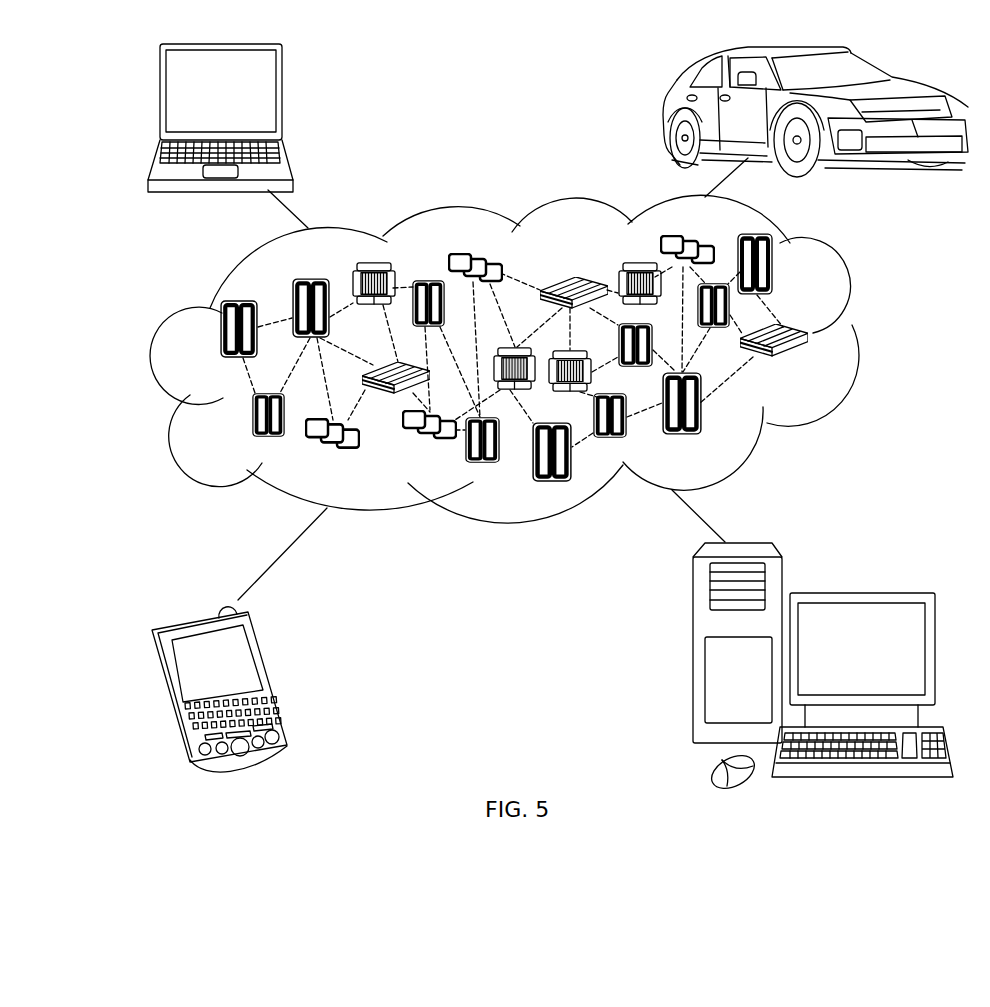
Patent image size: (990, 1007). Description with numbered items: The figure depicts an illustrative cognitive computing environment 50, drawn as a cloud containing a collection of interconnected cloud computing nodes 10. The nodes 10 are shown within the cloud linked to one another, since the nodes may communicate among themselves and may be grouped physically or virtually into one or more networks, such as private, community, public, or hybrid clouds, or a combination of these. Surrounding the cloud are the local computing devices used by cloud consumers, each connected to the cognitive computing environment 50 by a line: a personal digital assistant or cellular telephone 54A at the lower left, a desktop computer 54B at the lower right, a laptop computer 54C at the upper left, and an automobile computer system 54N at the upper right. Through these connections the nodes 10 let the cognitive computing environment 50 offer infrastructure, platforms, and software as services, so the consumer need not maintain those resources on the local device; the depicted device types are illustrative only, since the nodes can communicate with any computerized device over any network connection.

The cloud computing node 10 is at (806, 366).
The cognitive computing environment 50 is at (860, 338).
The personal digital assistant or cellular telephone 54A is at (277, 677).
The desktop computer 54B is at (860, 593).
The laptop computer 54C is at (283, 100).
The automobile computer system 54N is at (668, 112).